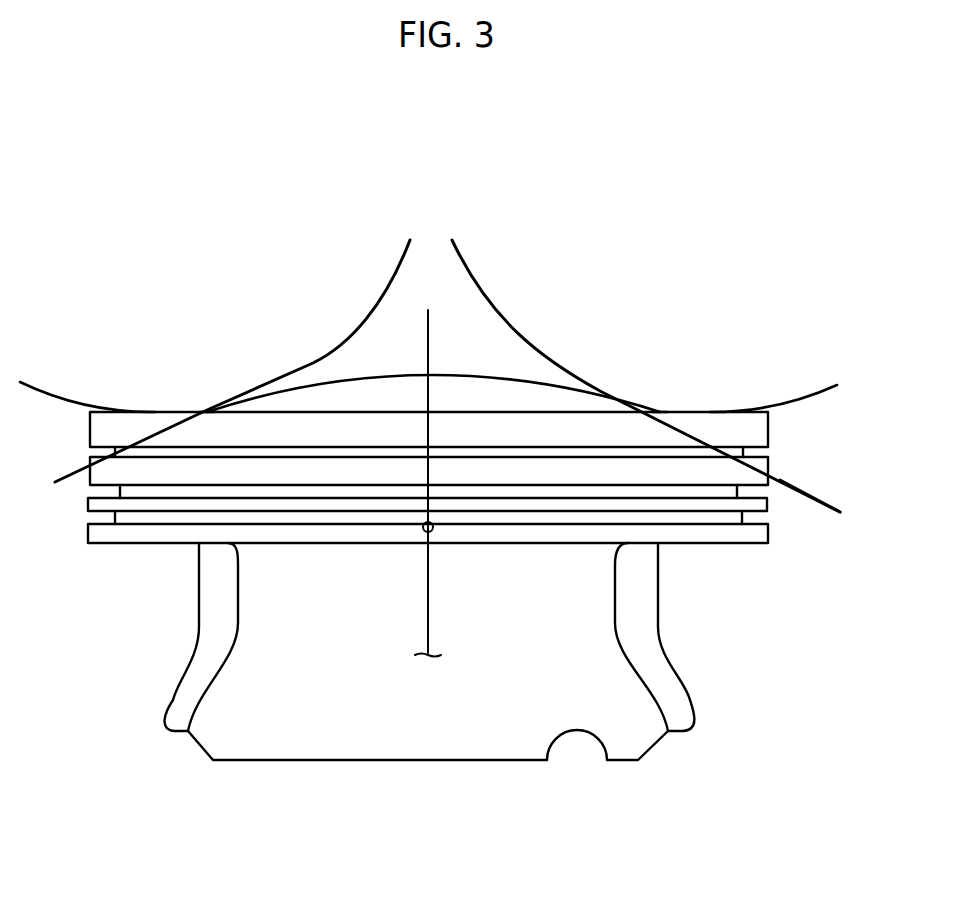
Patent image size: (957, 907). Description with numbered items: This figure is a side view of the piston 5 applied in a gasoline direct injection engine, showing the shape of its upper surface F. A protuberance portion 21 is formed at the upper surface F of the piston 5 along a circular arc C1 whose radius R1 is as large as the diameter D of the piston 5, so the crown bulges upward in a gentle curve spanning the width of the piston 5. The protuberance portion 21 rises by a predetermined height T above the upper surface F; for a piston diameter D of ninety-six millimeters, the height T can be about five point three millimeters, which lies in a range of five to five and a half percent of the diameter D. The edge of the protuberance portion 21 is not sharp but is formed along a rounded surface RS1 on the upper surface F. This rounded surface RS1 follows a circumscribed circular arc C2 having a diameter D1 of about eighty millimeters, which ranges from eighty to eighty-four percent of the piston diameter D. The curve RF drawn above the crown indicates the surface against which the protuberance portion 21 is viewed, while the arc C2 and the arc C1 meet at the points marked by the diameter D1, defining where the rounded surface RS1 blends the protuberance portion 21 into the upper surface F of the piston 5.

The piston 5 is at (595, 593).
The protuberance portion 21 is at (328, 394).
The roof surface curve RF is at (498, 377).
The circumscribed circular arc C2 is at (832, 385).
The circular arc C1 is at (812, 495).
The diameter of circumscribed circular arc D1 is at (207, 411).
The rounded surface RS1 is at (667, 408).
The upper surface F is at (282, 404).
The diameter of piston D is at (768, 412).
The height of protuberance portion T is at (402, 376).
The radius of circular arc R1 is at (457, 435).